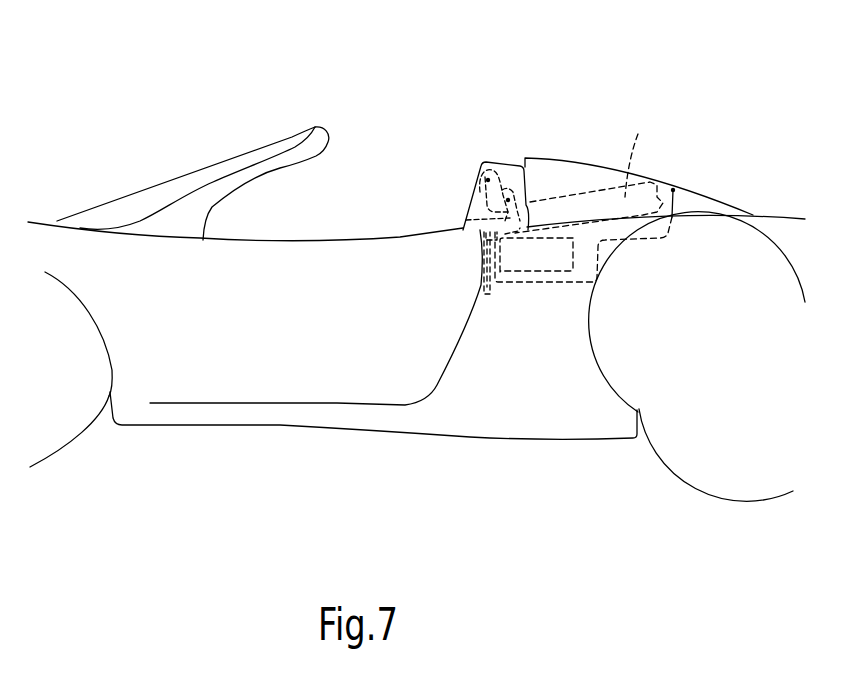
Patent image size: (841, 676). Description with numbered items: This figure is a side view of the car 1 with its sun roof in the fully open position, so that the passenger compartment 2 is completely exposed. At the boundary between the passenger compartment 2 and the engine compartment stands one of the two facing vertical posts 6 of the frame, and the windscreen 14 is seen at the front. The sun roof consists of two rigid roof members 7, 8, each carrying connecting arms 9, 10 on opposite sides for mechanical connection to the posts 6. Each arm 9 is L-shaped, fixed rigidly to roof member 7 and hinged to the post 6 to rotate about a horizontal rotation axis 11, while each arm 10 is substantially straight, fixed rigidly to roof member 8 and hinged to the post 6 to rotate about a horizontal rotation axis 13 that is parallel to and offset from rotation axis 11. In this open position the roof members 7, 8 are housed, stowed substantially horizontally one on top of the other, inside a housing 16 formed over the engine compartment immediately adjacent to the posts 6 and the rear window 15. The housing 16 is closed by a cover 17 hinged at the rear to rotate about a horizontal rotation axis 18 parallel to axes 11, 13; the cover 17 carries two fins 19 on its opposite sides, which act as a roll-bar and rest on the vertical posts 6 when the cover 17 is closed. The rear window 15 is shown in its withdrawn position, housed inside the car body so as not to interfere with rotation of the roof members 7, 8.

The car 1 is at (300, 446).
The passenger compartment 2 is at (278, 109).
The vertical post 6 is at (512, 173).
The roof member 7 is at (636, 154).
The roof member 8 is at (537, 258).
The connecting arm 9 is at (482, 196).
The connecting arm 10 is at (470, 220).
The horizontal rotation axis 11 is at (487, 177).
The horizontal rotation axis 13 is at (507, 197).
The windscreen 14 is at (195, 177).
The rear window 15 is at (489, 297).
The housing 16 is at (668, 236).
The cover 17 is at (563, 155).
The horizontal rotation axis 18 is at (675, 186).
The fin 19 is at (588, 170).